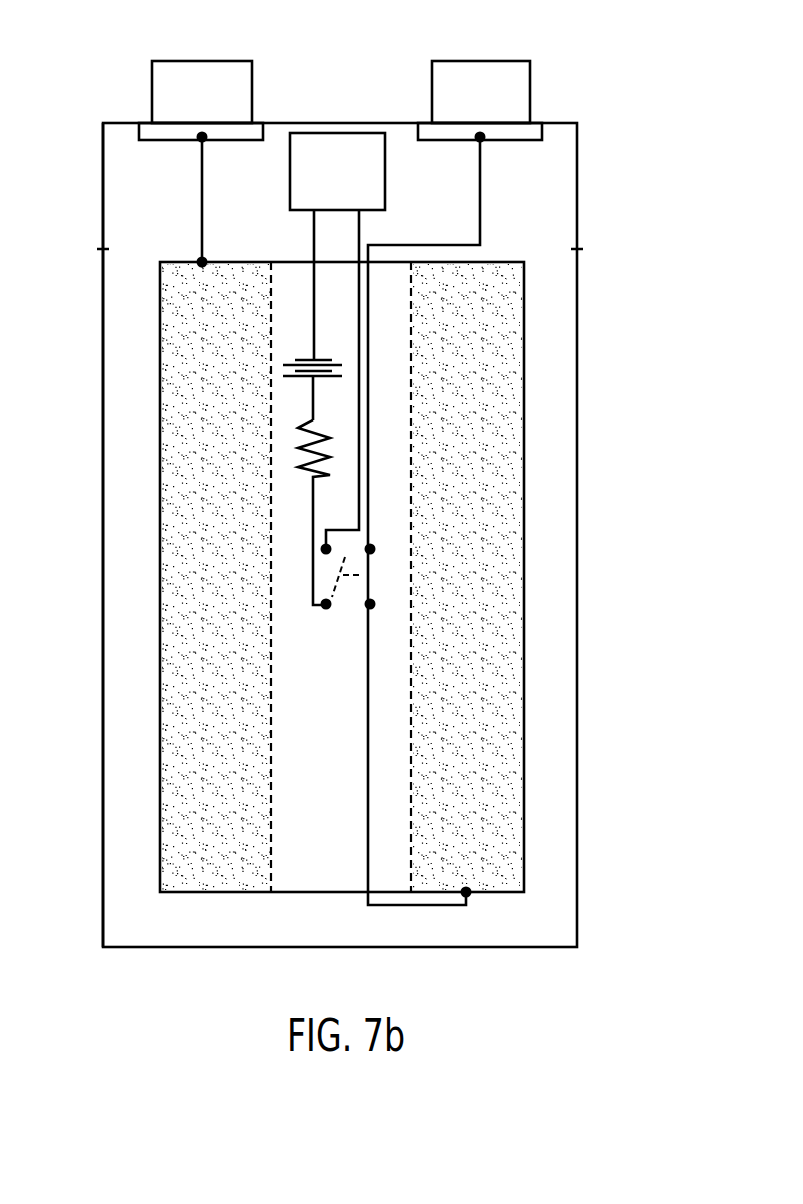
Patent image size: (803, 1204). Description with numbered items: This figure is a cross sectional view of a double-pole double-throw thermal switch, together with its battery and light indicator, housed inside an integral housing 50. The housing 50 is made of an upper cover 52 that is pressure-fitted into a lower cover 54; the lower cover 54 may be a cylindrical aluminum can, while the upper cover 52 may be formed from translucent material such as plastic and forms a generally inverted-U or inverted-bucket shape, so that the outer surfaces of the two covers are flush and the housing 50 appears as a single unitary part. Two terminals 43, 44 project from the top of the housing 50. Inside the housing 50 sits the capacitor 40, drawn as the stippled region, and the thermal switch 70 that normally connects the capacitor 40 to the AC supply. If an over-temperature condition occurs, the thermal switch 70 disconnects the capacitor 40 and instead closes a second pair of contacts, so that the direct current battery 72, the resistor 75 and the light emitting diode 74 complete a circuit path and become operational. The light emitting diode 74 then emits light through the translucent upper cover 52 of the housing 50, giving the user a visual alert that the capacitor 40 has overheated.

The capacitor 40 is at (515, 437).
The first terminal T1 43 is at (200, 60).
The second terminal T2 44 is at (480, 60).
The housing 50 is at (577, 586).
The upper cover 52 is at (103, 200).
The lower cover 54 is at (103, 662).
The thermal switch 70 is at (293, 578).
The battery 72 is at (283, 371).
The light emitting diode 74 is at (338, 133).
The resistor 75 is at (293, 475).